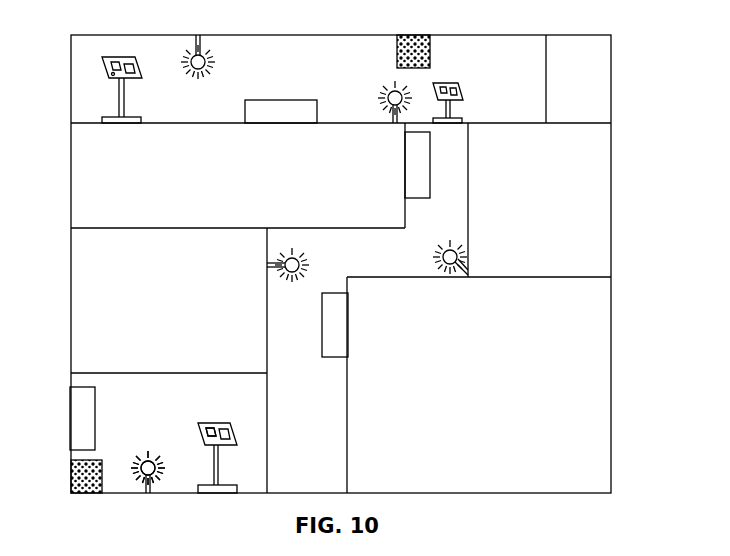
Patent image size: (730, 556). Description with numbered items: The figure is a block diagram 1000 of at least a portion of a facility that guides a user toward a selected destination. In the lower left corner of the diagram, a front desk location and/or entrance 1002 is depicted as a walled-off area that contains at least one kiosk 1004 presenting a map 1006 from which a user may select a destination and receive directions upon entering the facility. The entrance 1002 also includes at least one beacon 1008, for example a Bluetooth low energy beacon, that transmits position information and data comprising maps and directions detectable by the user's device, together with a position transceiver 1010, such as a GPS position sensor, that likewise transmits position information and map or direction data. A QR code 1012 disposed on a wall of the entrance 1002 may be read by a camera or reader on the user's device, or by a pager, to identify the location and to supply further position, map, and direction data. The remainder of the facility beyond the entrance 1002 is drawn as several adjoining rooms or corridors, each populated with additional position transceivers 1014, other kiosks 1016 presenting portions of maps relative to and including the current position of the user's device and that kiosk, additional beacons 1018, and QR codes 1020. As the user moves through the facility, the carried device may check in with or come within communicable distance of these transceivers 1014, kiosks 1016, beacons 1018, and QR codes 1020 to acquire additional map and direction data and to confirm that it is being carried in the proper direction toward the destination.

The block diagram 1000 is at (619, 44).
The front desk location and/or entrance 1002 is at (71, 375).
The kiosk 1004 is at (204, 421).
The map 1006 is at (245, 422).
The beacon 1008 is at (139, 457).
The position transceiver 1010 is at (100, 410).
The QR code 1012 is at (86, 491).
The additional position transceivers 1014 is at (301, 100).
The other kiosks 1016 is at (102, 67).
The additional beacons 1018 is at (210, 57).
The QR codes 1020 is at (432, 46).